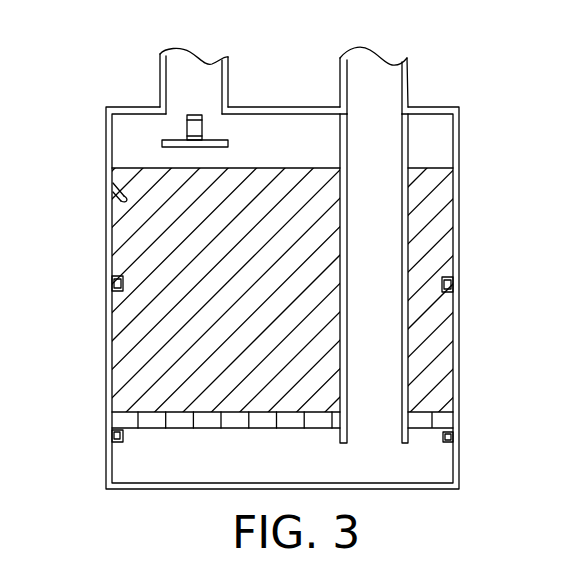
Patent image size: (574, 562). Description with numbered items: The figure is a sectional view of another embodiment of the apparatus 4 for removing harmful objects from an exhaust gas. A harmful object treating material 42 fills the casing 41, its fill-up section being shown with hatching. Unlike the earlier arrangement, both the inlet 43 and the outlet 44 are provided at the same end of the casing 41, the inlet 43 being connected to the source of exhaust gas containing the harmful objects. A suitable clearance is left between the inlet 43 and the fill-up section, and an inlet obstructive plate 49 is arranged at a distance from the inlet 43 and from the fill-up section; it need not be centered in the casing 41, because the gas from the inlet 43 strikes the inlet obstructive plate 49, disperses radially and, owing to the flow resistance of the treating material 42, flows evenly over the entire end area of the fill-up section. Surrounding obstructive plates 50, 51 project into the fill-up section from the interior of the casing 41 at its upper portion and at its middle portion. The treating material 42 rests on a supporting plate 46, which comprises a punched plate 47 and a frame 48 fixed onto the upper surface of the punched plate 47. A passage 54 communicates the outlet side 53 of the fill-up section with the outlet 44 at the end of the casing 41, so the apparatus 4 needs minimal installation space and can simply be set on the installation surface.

The apparatus 4 is at (287, 281).
The casing 41 is at (460, 157).
The harmful object treating material 42 is at (307, 278).
The inlet 43 is at (178, 60).
The outlet 44 is at (392, 85).
The supporting plate 46 is at (148, 411).
The punched plate 47 is at (263, 422).
The frame 48 is at (423, 413).
The inlet obstructive plate 49 is at (167, 143).
The surrounding obstructive plate 50 is at (127, 200).
The surrounding obstructive plate 51 is at (113, 295).
The outlet side of the fill-up section 53 is at (166, 460).
The passage 54 is at (392, 352).